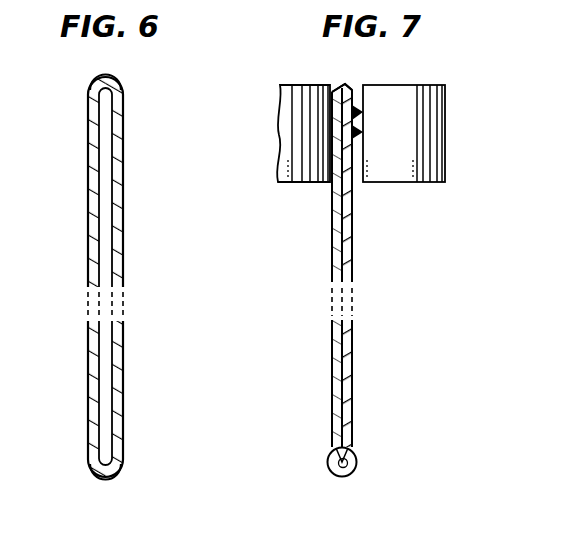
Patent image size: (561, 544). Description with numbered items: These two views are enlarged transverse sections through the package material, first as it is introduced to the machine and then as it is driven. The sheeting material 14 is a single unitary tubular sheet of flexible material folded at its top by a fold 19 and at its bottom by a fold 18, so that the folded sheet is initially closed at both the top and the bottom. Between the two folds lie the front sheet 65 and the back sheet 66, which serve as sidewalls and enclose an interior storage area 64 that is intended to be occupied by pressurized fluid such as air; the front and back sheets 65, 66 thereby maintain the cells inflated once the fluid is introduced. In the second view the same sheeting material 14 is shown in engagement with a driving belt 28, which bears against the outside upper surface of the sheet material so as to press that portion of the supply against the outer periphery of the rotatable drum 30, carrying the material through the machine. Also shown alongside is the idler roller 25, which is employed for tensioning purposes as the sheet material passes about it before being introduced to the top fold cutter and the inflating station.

In FIG. 6, the sheeting material 14 is at (108, 280).
In FIG. 7, the sheeting material 14 is at (390, 265).
In FIG. 6, the fold 19 is at (93, 80).
In FIG. 7, the fold 19 is at (345, 85).
In FIG. 6, the fold 18 is at (101, 471).
In FIG. 6, the interior storage area 64 is at (105, 420).
In FIG. 6, the front sheet 65 is at (92, 385).
In FIG. 7, the front sheet 65 is at (341, 400).
In FIG. 6, the back sheet 66 is at (124, 383).
In FIG. 7, the back sheet 66 is at (352, 440).
In FIG. 7, the drum 30 is at (291, 149).
In FIG. 7, the idler roller 25 is at (425, 140).
In FIG. 7, the belt 28 is at (360, 150).